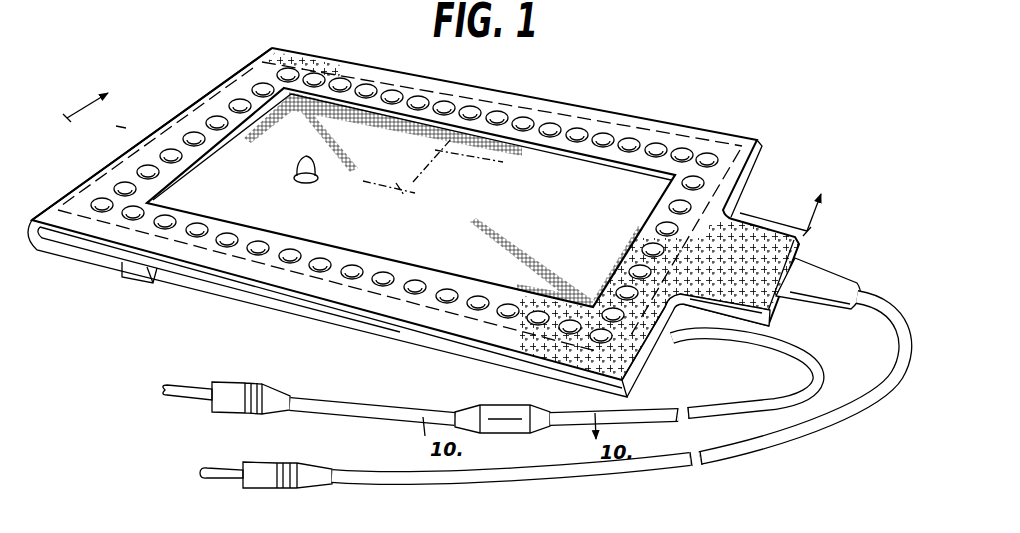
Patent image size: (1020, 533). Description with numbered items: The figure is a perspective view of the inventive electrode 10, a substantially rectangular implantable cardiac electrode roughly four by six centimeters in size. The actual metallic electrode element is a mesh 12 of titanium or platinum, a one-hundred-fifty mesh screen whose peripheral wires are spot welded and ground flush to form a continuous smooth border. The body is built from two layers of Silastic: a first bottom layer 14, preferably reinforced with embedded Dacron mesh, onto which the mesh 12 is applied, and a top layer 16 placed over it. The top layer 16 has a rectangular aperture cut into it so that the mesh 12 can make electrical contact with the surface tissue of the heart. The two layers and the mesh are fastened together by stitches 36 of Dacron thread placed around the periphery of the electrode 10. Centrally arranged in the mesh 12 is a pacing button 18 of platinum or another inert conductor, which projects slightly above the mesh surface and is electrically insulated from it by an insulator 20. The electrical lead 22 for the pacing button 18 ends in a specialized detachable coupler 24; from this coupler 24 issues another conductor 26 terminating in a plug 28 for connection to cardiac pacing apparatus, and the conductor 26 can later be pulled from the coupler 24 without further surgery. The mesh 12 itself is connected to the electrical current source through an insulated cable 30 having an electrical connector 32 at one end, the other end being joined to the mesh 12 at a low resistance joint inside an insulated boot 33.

The electrode 10 is at (645, 72).
The mesh 12 is at (374, 130).
The bottom layer 14 is at (123, 263).
The top layer 16 is at (652, 355).
The pacing button 18 is at (294, 160).
The insulator 20 is at (302, 185).
The electrical lead 22 is at (762, 404).
The detachable coupler 24 is at (494, 410).
The conductor 26 is at (372, 412).
The plug 28 is at (246, 384).
The insulated cable 30 is at (880, 300).
The electrical connector 32 is at (254, 488).
The insulated boot 33 is at (781, 316).
The stitches 36 is at (82, 183).